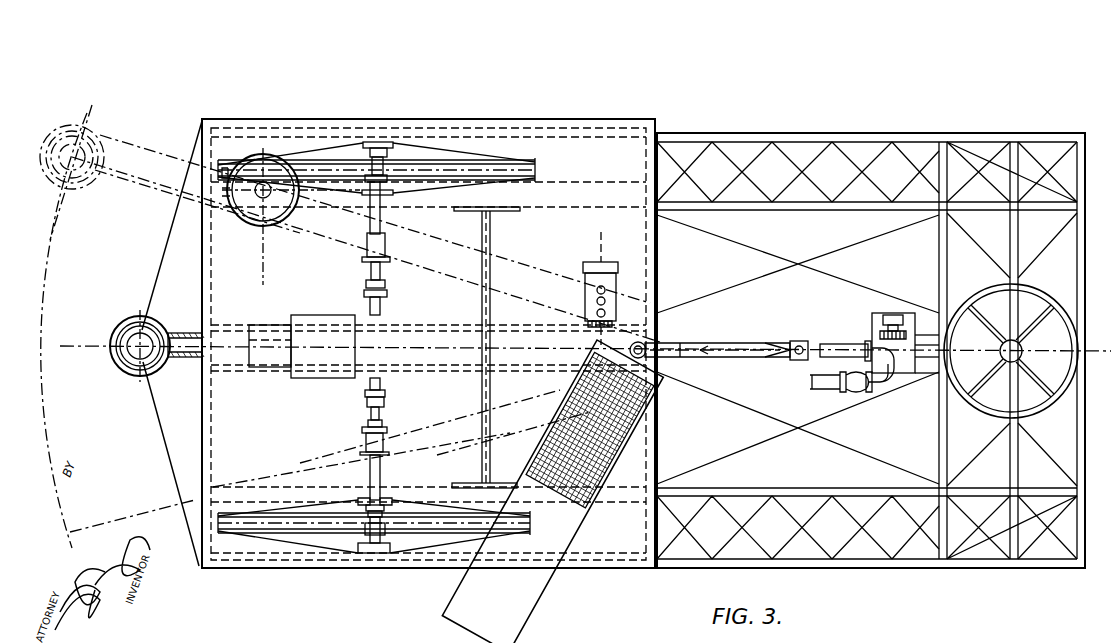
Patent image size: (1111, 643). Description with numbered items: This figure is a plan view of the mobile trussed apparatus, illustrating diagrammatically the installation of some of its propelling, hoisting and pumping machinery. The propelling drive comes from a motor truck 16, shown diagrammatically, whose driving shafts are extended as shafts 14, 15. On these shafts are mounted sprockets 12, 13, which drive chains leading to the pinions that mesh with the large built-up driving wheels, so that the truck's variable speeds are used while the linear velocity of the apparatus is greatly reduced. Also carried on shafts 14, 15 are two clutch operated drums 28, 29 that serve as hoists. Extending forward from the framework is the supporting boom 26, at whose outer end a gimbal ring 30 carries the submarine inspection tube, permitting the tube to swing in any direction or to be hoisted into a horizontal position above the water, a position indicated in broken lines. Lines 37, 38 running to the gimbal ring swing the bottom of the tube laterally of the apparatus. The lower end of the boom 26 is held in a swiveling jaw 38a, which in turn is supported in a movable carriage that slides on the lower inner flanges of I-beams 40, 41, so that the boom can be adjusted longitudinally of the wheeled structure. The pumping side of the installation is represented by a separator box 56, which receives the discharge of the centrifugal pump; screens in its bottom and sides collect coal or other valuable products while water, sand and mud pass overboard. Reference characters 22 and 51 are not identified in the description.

The sprocket 12 is at (388, 510).
The sprocket 13 is at (387, 179).
The shaft 14 is at (381, 478).
The shaft 15 is at (381, 226).
The motor truck 16 is at (302, 346).
The drive pulley 22 is at (291, 216).
The supporting boom 26 is at (184, 337).
The clutch operated drum 28 is at (388, 439).
The clutch operated drum 29 is at (388, 262).
The gimbal ring 30 is at (150, 317).
The line 37 is at (170, 455).
The line 38 is at (180, 246).
The swiveling jaw 38a is at (797, 362).
The I-beam 40 is at (752, 370).
The I-beam 41 is at (760, 333).
The control box 51 is at (618, 280).
The separator box 56 is at (560, 420).